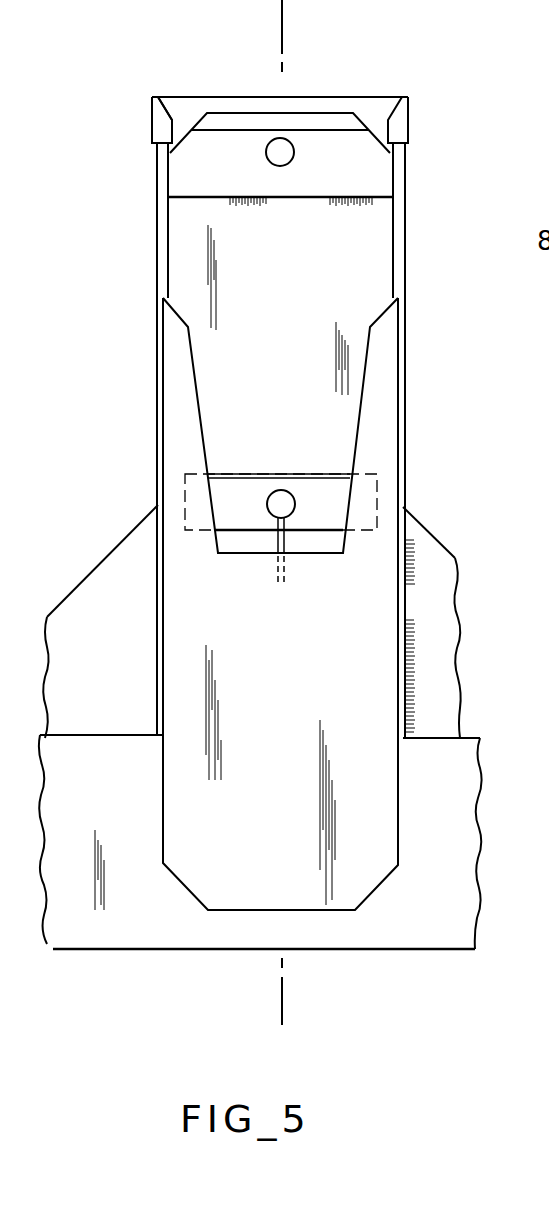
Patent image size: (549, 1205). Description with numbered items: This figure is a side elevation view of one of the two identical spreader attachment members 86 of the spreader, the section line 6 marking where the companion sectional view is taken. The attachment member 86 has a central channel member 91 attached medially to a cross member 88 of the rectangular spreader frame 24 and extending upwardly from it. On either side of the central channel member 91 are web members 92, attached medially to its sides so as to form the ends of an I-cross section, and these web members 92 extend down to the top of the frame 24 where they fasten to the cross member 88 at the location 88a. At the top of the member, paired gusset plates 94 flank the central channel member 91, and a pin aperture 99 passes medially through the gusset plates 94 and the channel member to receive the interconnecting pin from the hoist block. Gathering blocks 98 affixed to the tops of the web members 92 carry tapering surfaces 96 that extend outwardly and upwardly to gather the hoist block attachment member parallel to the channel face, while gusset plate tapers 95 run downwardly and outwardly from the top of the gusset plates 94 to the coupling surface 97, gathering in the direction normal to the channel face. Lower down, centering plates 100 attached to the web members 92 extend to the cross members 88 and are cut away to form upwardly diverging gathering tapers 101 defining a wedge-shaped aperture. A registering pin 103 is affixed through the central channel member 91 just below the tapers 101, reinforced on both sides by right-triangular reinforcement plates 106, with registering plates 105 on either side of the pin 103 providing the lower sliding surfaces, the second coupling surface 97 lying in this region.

The section line 6- 6 is at (325, 1008).
The spreader frame 24 is at (197, 950).
The spreader attachment member 86 is at (407, 214).
The cross member 88 is at (122, 803).
The web member fastening location 88a is at (160, 734).
The central channel member 91 is at (264, 330).
The web member 92 is at (157, 260).
The gusset plate 94 is at (180, 170).
The gusset plate taper 95 is at (297, 120).
The tapering surface 96 is at (172, 106).
The coupling surface 97 is at (208, 180).
The gathering block 98 is at (146, 114).
The pin aperture 99 is at (290, 157).
The centering plate 100 is at (258, 662).
The gathering taper 101 is at (358, 425).
The registering pin 103 is at (277, 491).
The registering plate 105 is at (305, 475).
The reinforcement plate 106 is at (273, 547).